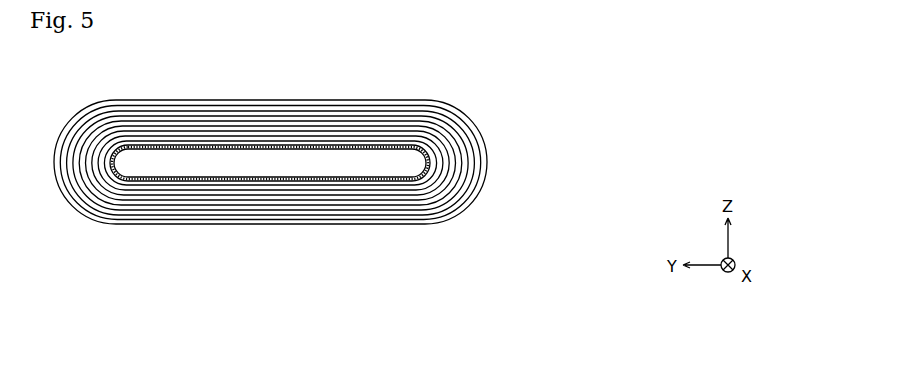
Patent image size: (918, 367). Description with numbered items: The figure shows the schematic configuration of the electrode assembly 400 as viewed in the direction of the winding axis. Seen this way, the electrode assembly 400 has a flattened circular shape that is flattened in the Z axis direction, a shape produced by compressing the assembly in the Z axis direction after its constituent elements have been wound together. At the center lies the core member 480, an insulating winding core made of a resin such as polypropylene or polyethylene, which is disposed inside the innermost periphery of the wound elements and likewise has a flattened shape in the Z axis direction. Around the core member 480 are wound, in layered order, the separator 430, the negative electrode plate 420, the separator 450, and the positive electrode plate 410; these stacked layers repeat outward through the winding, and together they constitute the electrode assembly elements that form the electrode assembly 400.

The electrode assembly 400 is at (449, 67).
The positive electrode plate 410 is at (356, 180).
The negative electrode plate 420 is at (349, 163).
The separator 430 is at (430, 223).
The separator 450 is at (353, 230).
The core member 480 is at (257, 150).